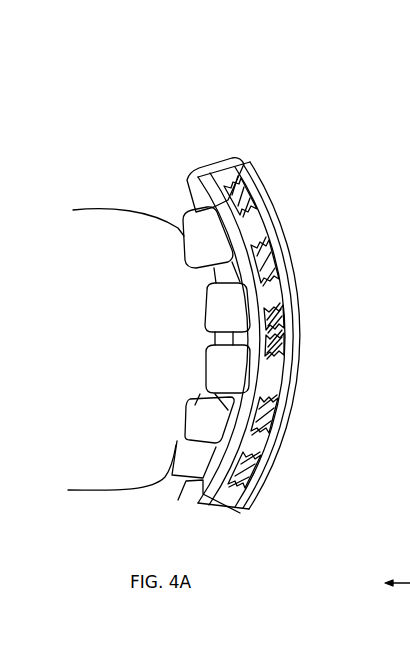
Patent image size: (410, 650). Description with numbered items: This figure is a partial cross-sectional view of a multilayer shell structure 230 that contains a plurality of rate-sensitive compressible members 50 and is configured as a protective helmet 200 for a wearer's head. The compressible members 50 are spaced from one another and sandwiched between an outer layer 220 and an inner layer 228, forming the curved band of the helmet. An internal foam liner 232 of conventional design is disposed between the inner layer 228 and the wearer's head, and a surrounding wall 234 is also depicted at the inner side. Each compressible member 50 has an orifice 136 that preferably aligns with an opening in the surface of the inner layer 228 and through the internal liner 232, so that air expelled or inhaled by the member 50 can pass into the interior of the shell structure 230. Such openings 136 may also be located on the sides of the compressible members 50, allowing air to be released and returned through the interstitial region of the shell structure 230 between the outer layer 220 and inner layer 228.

The protective helmet 200 is at (306, 343).
The outer layer 220 is at (254, 172).
The rate-sensitive compressible member 50 is at (282, 252).
The orifice 136 is at (240, 196).
The multilayer shell structure 230 is at (240, 124).
The internal foam liner 232 is at (205, 367).
The casing wall 234 is at (138, 249).
The inner layer 228 is at (183, 497).